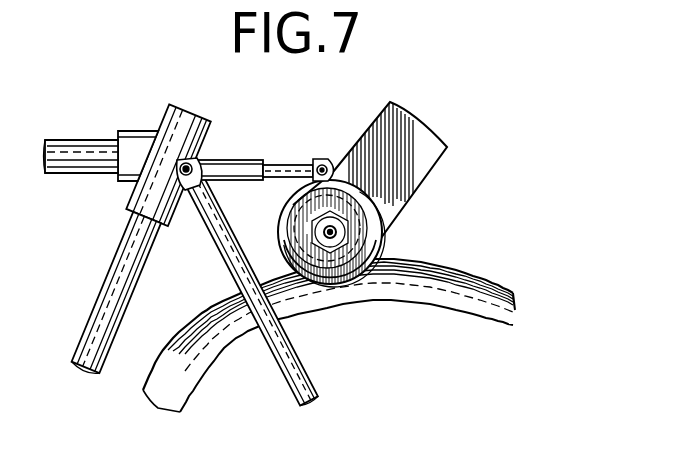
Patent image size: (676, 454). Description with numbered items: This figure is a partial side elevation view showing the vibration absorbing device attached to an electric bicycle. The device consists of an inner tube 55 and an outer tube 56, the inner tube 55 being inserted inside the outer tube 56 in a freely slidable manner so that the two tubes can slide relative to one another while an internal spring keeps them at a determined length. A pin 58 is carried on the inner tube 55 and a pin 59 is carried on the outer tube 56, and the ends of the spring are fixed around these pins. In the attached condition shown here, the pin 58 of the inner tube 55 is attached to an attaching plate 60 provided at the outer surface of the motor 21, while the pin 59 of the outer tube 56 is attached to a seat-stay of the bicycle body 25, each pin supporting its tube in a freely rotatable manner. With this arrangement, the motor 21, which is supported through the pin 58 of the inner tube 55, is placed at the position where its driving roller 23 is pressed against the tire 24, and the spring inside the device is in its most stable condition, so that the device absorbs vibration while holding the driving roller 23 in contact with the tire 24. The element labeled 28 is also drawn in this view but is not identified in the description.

The motor 21 is at (378, 243).
The driving roller 23 is at (367, 200).
The tire 24 is at (480, 296).
The bicycle body 25 is at (84, 138).
The guide plate 28 is at (430, 160).
The inner tube 55 is at (277, 185).
The outer tube 56 is at (241, 180).
The pin 58 is at (326, 162).
The pin 59 is at (193, 163).
The attaching plate 60 is at (317, 168).